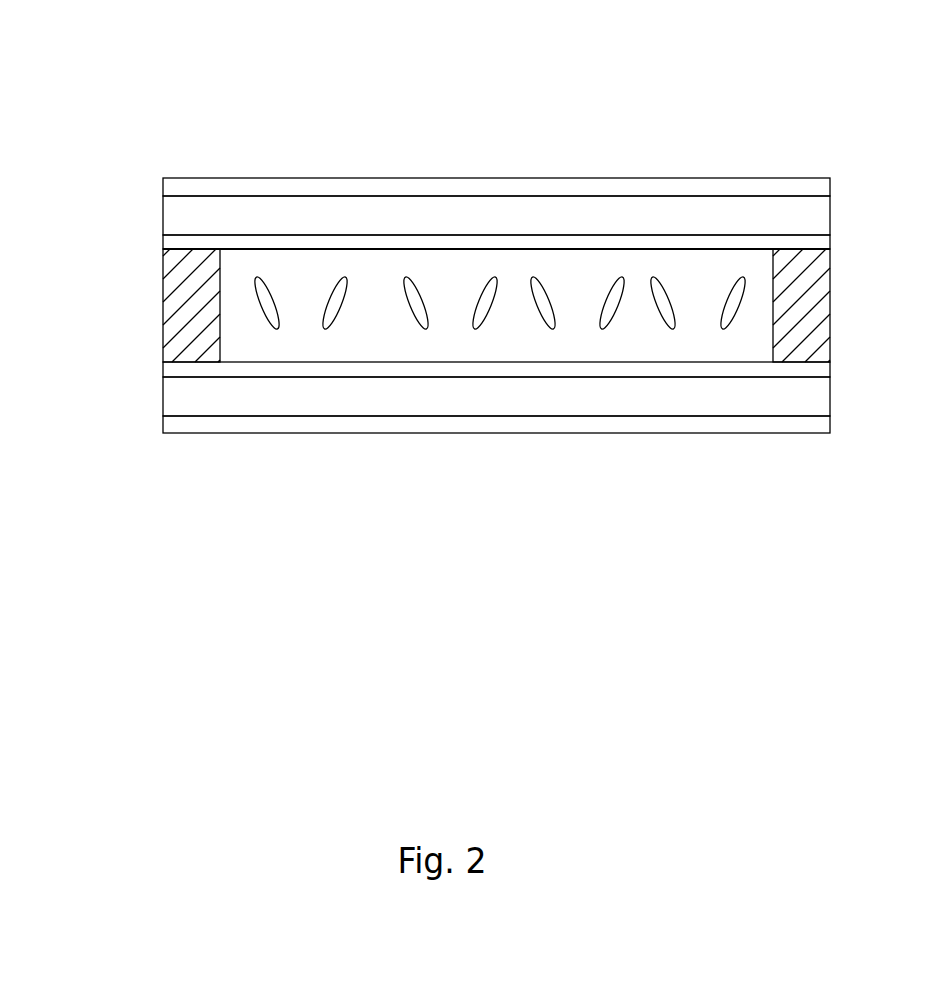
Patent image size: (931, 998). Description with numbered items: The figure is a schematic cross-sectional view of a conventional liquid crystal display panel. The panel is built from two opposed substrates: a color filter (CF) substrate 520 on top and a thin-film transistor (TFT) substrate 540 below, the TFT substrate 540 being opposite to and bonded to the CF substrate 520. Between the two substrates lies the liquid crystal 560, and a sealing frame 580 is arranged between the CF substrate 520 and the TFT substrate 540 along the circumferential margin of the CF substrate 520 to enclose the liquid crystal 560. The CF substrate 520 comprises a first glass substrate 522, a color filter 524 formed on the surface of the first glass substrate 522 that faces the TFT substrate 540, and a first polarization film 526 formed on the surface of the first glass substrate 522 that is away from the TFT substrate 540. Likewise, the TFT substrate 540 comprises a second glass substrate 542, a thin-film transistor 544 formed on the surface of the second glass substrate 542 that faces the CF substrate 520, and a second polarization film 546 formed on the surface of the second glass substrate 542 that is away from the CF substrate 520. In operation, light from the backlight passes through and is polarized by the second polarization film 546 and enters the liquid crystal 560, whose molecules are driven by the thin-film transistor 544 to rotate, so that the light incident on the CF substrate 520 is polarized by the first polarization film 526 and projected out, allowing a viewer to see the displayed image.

The color filter (CF) substrate 520 is at (496, 127).
The first glass substrate 522 is at (520, 223).
The color filter 524 is at (657, 70).
The first polarization film 526 is at (685, 187).
The thin-film transistor (TFT) substrate 540 is at (496, 486).
The second glass substrate 542 is at (522, 388).
The thin-film transistor 544 is at (333, 373).
The second polarization film 546 is at (170, 543).
The liquid crystal 560 is at (258, 297).
The sealing frame 580 is at (177, 333).